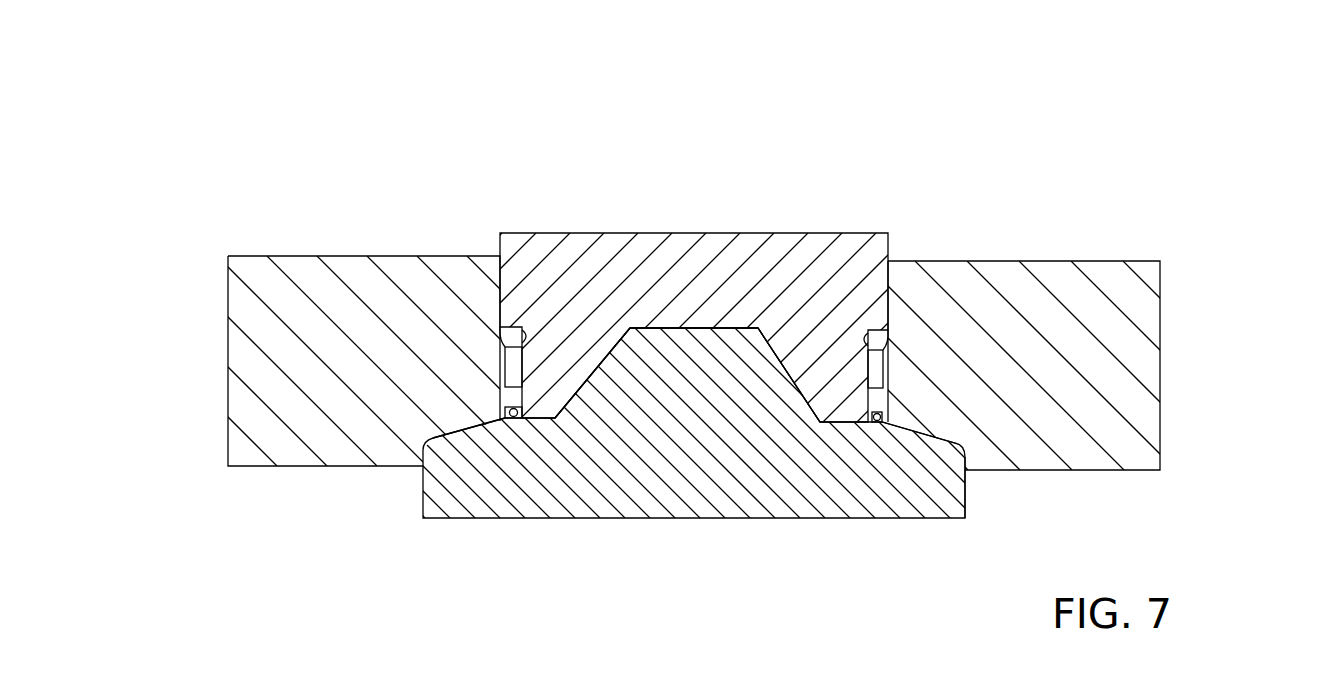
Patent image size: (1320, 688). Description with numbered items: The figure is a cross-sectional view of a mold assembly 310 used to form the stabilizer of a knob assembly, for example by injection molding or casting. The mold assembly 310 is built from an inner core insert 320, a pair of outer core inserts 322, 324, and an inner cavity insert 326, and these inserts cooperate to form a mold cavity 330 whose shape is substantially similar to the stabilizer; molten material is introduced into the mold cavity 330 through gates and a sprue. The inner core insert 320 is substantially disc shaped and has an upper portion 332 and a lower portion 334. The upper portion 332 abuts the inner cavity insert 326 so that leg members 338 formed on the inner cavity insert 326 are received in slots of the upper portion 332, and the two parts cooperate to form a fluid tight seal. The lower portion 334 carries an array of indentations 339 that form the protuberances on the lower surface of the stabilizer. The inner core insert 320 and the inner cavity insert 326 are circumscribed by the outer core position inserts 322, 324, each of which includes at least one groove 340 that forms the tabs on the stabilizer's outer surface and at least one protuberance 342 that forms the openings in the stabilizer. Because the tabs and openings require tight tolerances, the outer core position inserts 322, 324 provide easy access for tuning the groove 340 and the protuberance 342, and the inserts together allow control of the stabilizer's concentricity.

The mold assembly 310 is at (197, 93).
The inner core insert 320 is at (692, 527).
The outer core insert 322 is at (1167, 352).
The outer core insert 324 is at (222, 348).
The inner cavity insert 326 is at (715, 224).
The mold cavity 330 is at (883, 368).
The upper portion 332 is at (727, 327).
The lower portion 334 is at (966, 492).
The leg members 338 is at (567, 400).
The indentations 339 is at (506, 417).
The groove 340 is at (506, 330).
The protuberance 342 is at (513, 420).